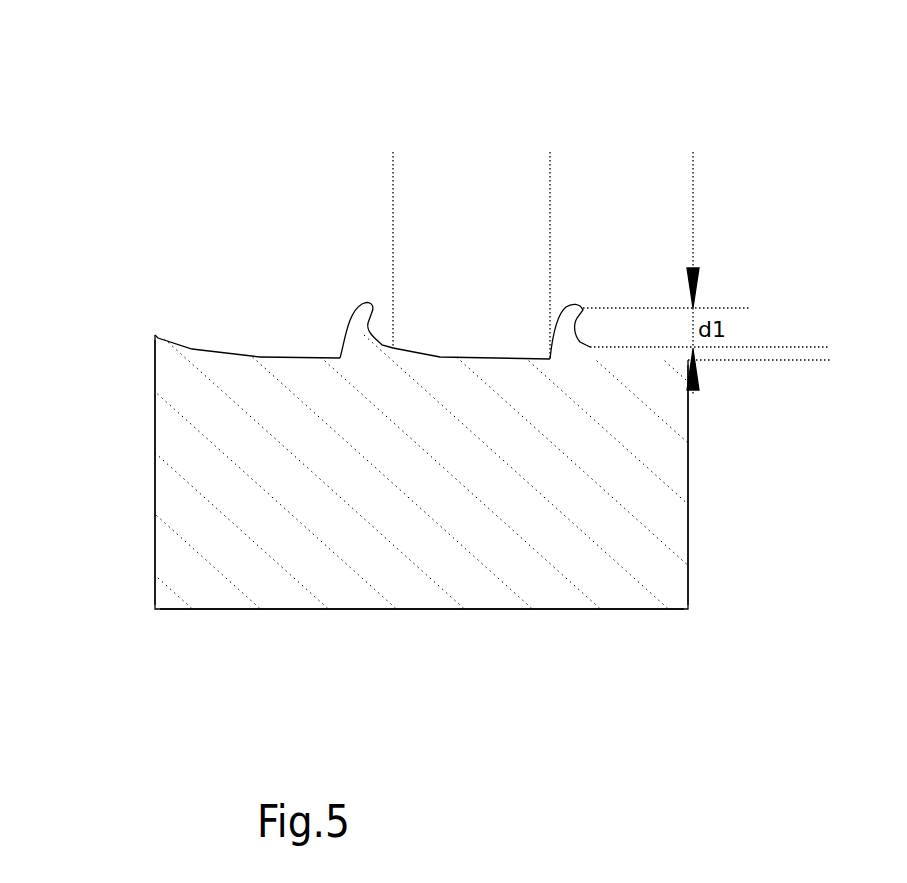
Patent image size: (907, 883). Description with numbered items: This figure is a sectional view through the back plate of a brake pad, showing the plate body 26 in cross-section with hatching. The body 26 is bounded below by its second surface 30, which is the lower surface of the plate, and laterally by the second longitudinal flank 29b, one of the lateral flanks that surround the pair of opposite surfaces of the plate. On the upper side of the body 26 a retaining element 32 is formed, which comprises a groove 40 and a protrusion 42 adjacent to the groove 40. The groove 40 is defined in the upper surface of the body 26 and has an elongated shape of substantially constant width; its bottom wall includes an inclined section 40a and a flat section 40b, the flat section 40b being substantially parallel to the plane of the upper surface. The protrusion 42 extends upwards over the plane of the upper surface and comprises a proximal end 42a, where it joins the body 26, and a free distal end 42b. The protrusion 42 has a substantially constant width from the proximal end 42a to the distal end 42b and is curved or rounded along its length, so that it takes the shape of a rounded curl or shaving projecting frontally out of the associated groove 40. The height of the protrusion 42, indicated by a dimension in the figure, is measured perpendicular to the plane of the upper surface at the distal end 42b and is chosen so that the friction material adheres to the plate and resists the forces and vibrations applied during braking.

The body 26 is at (385, 477).
The second longitudinal flank 29b is at (688, 461).
The second surface 30 is at (669, 610).
The retaining element 32 is at (260, 363).
The groove 40 is at (494, 345).
The inclined section 40a is at (190, 348).
The flat section 40b is at (283, 357).
The protrusion 42 is at (577, 305).
The proximal end 42a is at (353, 353).
The free distal end 42b is at (365, 300).